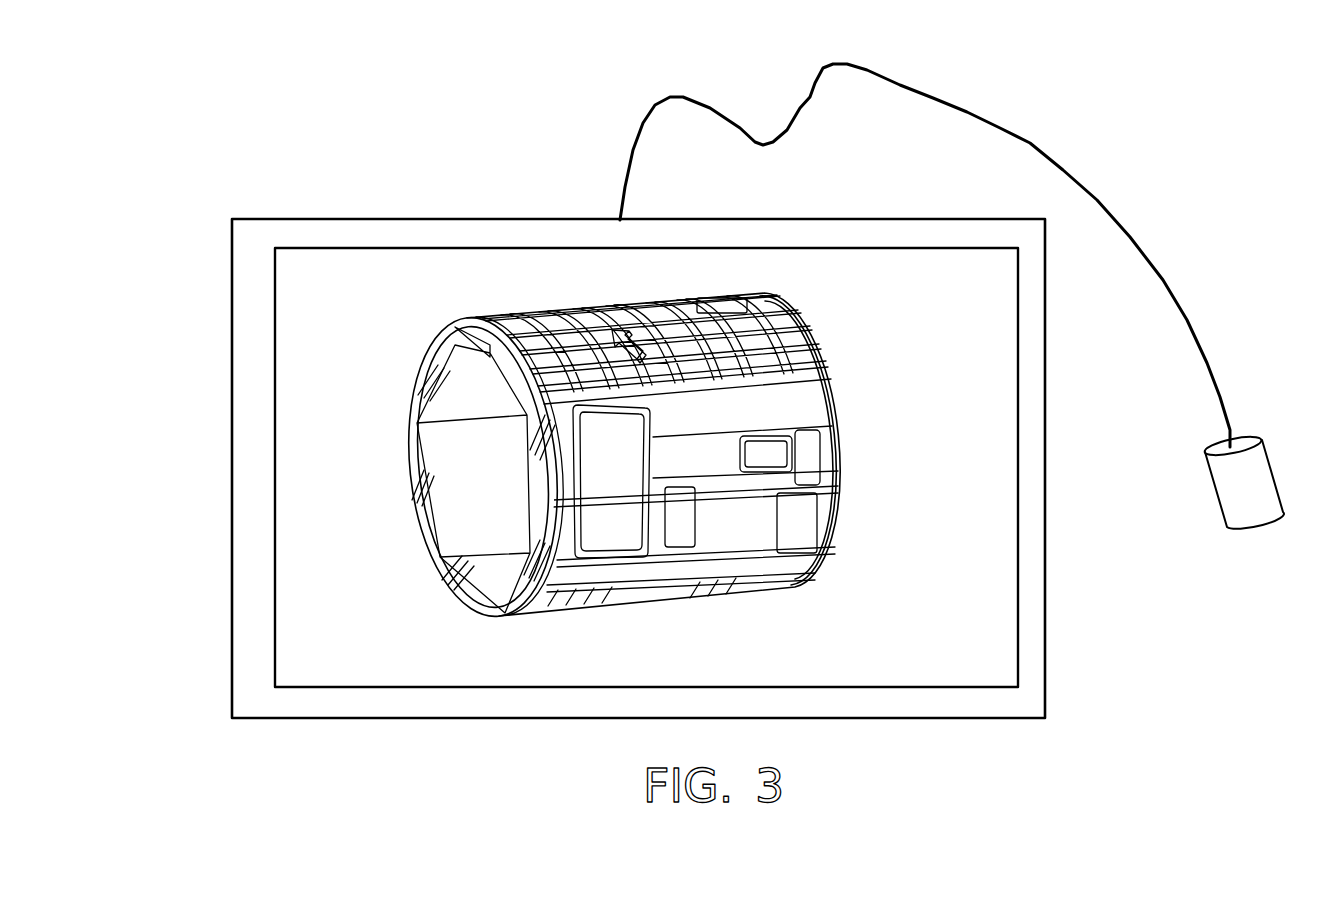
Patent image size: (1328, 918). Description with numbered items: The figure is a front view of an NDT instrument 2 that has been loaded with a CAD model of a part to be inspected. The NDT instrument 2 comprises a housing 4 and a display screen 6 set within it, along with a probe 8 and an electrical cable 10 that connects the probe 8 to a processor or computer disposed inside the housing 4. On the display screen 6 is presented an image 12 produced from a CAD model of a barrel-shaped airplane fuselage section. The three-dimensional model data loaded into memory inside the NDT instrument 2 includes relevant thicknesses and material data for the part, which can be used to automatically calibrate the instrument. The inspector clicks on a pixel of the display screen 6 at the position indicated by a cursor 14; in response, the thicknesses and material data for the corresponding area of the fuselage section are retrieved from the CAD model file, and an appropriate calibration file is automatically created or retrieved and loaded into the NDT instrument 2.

The NDT instrument 2 is at (306, 131).
The housing 4 is at (232, 570).
The display screen 6 is at (878, 645).
The probe 8 is at (1272, 481).
The electrical cable 10 is at (968, 112).
The image 12 is at (820, 348).
The cursor 14 is at (637, 333).